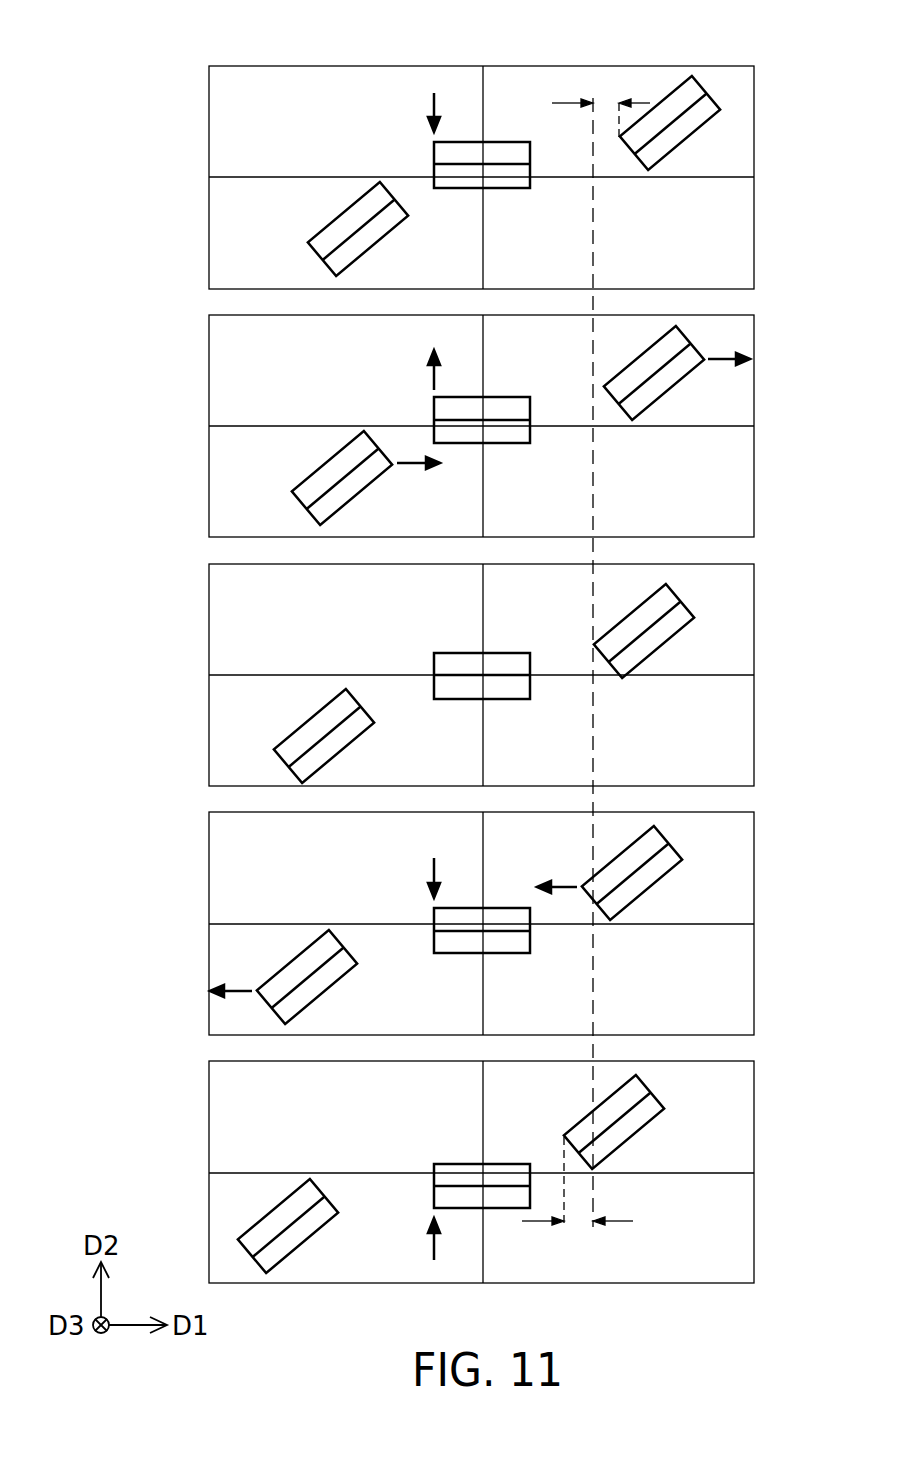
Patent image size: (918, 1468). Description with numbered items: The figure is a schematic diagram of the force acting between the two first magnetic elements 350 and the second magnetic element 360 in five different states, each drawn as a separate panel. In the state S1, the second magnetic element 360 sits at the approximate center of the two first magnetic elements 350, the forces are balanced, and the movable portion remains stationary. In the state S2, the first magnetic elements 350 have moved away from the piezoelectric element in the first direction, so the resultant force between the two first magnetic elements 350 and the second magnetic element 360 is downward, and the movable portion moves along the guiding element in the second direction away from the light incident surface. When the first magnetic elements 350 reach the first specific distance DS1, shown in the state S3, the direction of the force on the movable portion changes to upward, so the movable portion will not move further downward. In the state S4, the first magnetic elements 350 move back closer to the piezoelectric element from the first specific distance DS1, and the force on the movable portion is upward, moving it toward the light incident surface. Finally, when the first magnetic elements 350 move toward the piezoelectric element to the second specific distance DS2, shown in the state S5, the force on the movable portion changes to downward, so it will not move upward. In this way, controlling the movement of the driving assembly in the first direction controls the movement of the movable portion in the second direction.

The first magnetic element 350 is at (700, 108).
The second magnetic element 360 is at (513, 150).
The state S1 is at (209, 593).
The state S2 is at (209, 841).
The state S3 is at (209, 1090).
The state S4 is at (209, 344).
The state S5 is at (209, 95).
The first specific distance DS1 is at (577, 1199).
The second specific distance DS2 is at (601, 104).